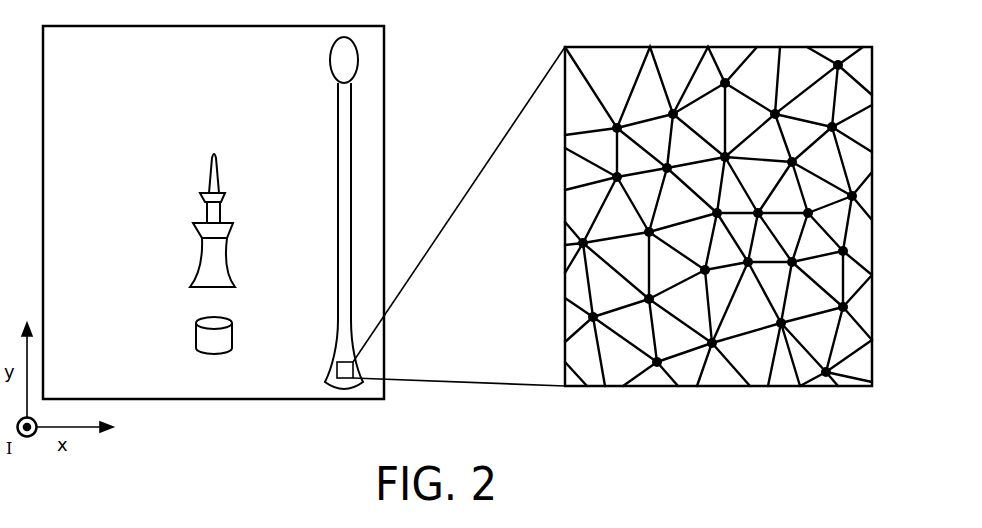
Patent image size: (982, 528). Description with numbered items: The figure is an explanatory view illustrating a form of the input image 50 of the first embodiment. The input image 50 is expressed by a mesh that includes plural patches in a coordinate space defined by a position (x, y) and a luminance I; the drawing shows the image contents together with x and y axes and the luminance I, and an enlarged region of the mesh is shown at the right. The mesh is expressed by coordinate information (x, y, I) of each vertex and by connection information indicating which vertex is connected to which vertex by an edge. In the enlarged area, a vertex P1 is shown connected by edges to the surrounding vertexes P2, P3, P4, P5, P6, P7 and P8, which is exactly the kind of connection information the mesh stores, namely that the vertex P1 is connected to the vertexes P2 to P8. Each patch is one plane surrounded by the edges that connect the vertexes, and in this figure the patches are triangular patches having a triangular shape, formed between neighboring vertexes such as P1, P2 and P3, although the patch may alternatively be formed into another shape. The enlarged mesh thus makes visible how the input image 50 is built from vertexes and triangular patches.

The input image 50 is at (384, 80).
The vertex P1 is at (724, 153).
The vertex P2 is at (724, 86).
The vertex P3 is at (775, 110).
The vertex P4 is at (792, 161).
The vertex P5 is at (758, 210).
The vertex P6 is at (716, 213).
The vertex P7 is at (667, 165).
The vertex P8 is at (673, 108).